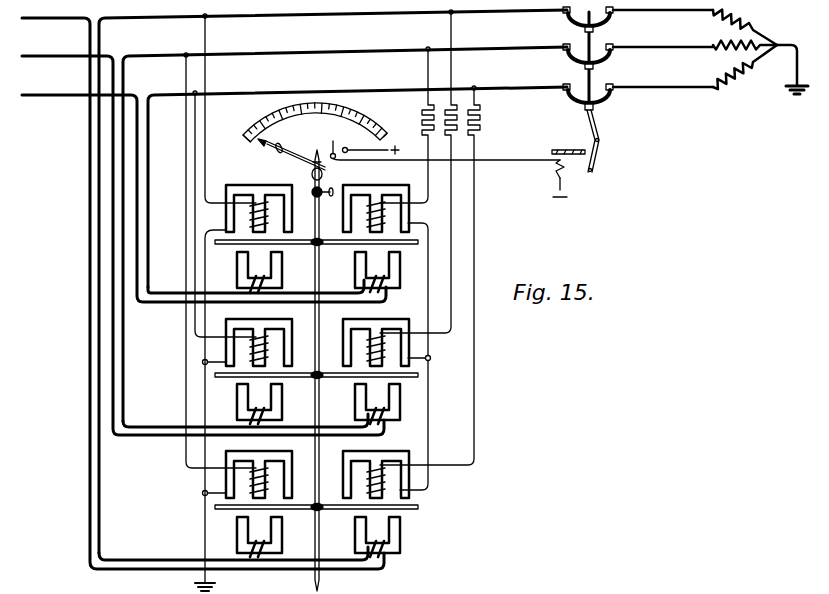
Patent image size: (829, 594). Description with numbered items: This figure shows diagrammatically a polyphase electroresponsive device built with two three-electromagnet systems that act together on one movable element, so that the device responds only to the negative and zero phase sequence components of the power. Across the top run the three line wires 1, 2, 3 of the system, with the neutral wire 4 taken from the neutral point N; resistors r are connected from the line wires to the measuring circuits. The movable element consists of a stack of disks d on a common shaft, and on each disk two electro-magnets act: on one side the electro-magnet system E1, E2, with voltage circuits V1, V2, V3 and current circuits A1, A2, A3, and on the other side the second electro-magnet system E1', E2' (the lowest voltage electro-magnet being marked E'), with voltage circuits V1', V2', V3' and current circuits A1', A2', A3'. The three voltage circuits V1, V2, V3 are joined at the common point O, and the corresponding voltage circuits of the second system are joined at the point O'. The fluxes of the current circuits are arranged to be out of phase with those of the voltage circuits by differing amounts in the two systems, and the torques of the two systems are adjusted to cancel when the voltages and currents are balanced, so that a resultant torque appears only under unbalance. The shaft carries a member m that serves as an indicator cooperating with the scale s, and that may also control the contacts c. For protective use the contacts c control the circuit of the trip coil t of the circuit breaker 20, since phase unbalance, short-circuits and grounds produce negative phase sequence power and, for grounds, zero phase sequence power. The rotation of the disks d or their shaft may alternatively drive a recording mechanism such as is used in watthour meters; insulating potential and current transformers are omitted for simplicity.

The line wire 1 is at (222, 94).
The line wire 2 is at (246, 57).
The line wire 3 is at (251, 19).
The neutral wire 4 is at (795, 44).
The circuit breaker 20 is at (598, 104).
The neutral point N is at (776, 50).
The resistors r is at (421, 122).
The scale s is at (365, 113).
The member m is at (280, 152).
The contacts c is at (443, 141).
The trip coil t is at (555, 163).
The disks d is at (298, 240).
The common point O is at (206, 495).
The terminal O' is at (426, 356).
The electro-magnet system E1 is at (251, 341).
The electro-magnet system E1' is at (383, 265).
The voltage electromagnet core (right, lower) E' is at (380, 465).
The electro-magnet system E2 is at (246, 402).
The electro-magnet system E2' is at (392, 402).
The voltage circuit V1 is at (252, 348).
The voltage circuit V2 is at (252, 480).
The voltage circuit V3 is at (252, 214).
The voltage circuit V1' is at (368, 480).
The voltage circuit V2' is at (368, 214).
The voltage circuit V3' is at (368, 348).
The current circuit A1 is at (258, 275).
The current circuit A2 is at (258, 407).
The current circuit A3 is at (258, 540).
The current circuit A1' is at (377, 275).
The current circuit A2' is at (377, 407).
The current circuit A3' is at (377, 540).